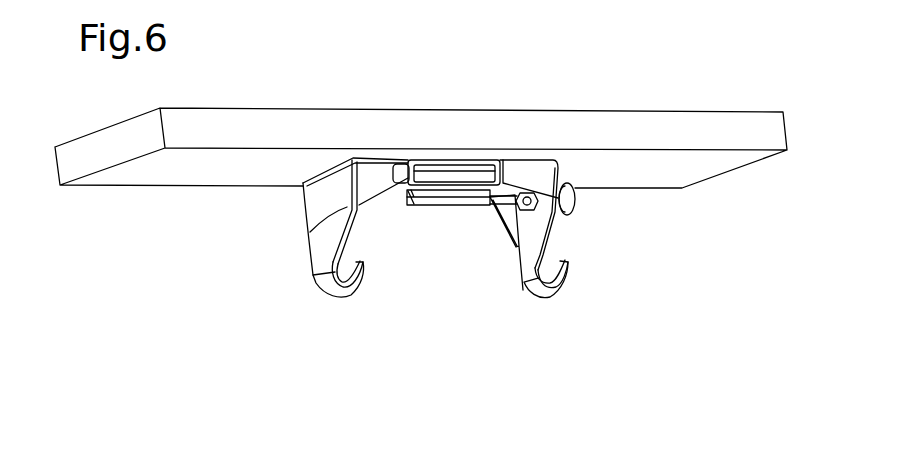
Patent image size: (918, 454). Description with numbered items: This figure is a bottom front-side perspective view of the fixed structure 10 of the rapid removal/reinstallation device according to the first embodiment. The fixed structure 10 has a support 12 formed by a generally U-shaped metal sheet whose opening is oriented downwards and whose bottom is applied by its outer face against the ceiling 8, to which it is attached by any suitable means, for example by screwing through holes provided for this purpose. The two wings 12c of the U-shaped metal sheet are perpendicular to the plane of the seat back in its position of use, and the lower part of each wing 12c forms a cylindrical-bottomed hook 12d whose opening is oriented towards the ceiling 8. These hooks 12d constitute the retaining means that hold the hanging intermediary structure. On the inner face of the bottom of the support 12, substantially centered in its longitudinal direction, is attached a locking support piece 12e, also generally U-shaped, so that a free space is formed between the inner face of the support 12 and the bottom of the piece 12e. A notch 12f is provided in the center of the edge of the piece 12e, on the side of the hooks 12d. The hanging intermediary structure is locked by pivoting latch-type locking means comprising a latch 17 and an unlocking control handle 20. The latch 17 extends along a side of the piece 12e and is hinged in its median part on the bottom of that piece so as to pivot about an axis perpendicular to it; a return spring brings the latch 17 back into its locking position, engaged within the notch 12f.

The ceiling 8 is at (712, 127).
The fixed structure 10 is at (372, 302).
The support 12 is at (303, 212).
The wings 12c is at (307, 240).
The hook 12d is at (313, 276).
The locking support piece 12e is at (432, 162).
The notch 12f is at (481, 200).
The latch 17 is at (473, 183).
The unlocking control handle 20 is at (575, 202).